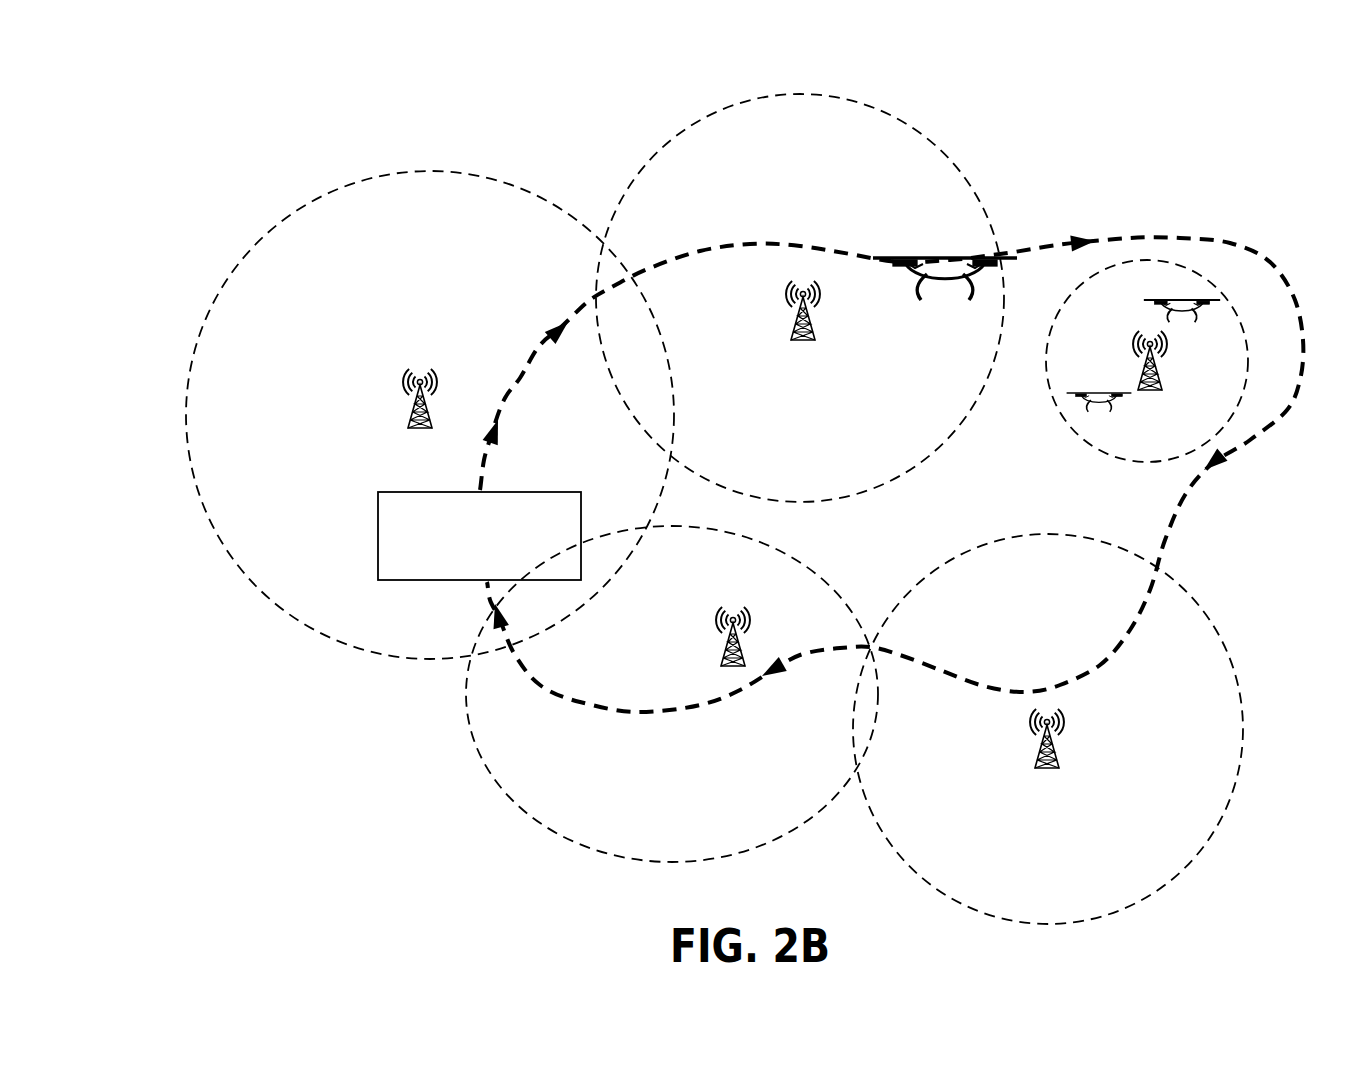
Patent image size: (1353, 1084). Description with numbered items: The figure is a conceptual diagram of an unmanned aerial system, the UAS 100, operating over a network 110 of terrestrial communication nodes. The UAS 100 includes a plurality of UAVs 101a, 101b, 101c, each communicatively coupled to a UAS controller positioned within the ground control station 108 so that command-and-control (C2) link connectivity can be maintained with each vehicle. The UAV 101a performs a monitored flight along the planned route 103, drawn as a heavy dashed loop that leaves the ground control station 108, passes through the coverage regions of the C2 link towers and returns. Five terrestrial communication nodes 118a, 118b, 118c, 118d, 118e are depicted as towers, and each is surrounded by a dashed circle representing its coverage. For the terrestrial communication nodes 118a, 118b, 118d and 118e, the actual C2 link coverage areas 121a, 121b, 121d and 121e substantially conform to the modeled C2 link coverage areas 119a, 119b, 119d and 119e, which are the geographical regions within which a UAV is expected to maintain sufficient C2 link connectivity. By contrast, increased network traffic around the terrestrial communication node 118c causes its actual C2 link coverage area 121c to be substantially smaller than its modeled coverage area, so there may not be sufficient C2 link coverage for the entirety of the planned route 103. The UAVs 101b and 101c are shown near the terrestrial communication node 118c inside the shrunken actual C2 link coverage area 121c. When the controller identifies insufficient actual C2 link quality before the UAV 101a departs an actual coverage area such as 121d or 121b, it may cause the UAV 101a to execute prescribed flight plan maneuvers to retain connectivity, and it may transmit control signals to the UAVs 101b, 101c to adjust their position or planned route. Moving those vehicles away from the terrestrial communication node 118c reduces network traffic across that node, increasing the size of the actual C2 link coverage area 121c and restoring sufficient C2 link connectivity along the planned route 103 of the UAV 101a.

The unmanned aerial system 100 is at (318, 82).
The network 110 is at (548, 164).
The modeled C2 link coverage area 119a is at (212, 310).
The modeled C2 link coverage area 119b is at (920, 124).
The modeled C2 link coverage area 119d is at (1236, 664).
The modeled C2 link coverage area 119e is at (542, 822).
The actual C2 link coverage area 121a is at (188, 404).
The actual C2 link coverage area 121b is at (978, 178).
The actual C2 link coverage area 121c is at (1238, 318).
The actual C2 link coverage area 121d is at (1246, 750).
The actual C2 link coverage area 121e is at (616, 856).
The terrestrial communication node 118a is at (412, 411).
The terrestrial communication node 118b is at (812, 324).
The terrestrial communication node 118c is at (1160, 368).
The terrestrial communication node 118d is at (1058, 756).
The terrestrial communication node 118e is at (748, 652).
The UAV 101a is at (935, 255).
The UAV 101b is at (1176, 290).
The UAV 101c is at (1110, 386).
The planned route 103 is at (518, 378).
The ground control station 108 is at (464, 573).